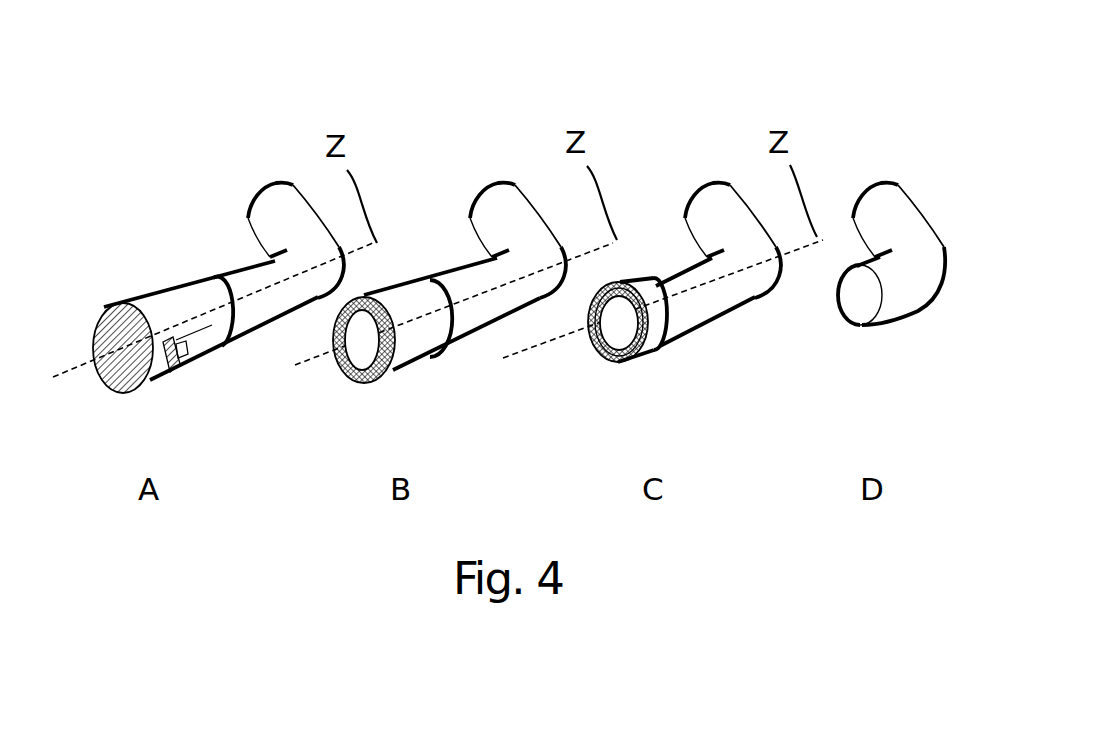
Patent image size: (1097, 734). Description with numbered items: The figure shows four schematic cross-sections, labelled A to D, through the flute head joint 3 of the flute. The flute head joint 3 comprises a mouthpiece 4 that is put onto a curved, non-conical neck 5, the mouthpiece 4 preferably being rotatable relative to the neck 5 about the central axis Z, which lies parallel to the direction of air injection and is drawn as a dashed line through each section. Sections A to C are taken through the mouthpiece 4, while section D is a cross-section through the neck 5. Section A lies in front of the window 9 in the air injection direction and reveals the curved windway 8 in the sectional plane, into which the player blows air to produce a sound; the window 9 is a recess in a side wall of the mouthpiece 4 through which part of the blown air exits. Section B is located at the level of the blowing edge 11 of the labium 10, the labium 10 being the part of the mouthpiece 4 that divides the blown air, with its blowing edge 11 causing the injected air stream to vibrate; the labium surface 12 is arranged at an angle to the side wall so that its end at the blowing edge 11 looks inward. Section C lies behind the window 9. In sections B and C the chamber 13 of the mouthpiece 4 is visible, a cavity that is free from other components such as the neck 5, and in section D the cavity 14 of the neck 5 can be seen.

The flute head joint 3 is at (276, 102).
The mouthpiece 4 is at (159, 260).
The neck 5 is at (574, 198).
The windway 8 is at (150, 363).
The window 9 is at (189, 388).
The labium 10 is at (183, 353).
The blowing edge 11 is at (181, 350).
The labium surface 12 is at (180, 341).
The chamber 13 is at (368, 358).
The cavity 14 is at (852, 298).